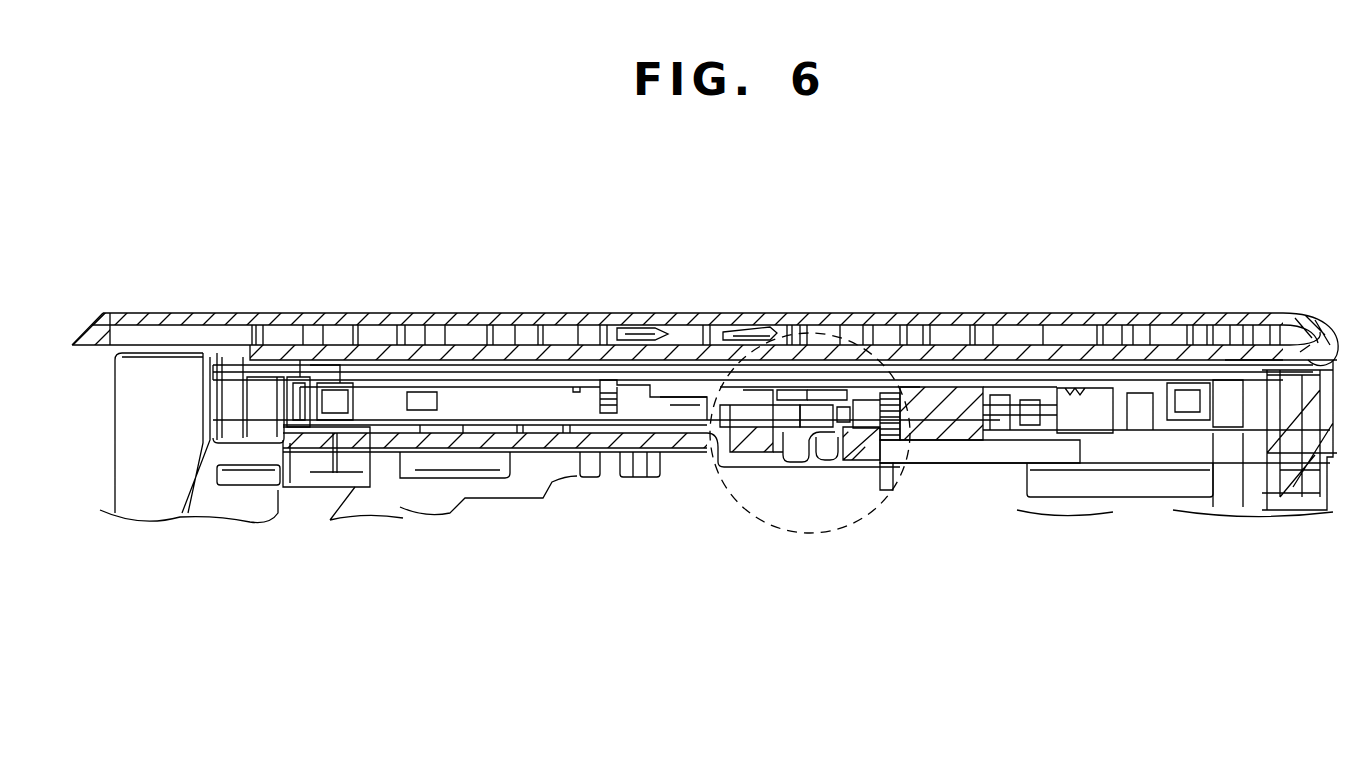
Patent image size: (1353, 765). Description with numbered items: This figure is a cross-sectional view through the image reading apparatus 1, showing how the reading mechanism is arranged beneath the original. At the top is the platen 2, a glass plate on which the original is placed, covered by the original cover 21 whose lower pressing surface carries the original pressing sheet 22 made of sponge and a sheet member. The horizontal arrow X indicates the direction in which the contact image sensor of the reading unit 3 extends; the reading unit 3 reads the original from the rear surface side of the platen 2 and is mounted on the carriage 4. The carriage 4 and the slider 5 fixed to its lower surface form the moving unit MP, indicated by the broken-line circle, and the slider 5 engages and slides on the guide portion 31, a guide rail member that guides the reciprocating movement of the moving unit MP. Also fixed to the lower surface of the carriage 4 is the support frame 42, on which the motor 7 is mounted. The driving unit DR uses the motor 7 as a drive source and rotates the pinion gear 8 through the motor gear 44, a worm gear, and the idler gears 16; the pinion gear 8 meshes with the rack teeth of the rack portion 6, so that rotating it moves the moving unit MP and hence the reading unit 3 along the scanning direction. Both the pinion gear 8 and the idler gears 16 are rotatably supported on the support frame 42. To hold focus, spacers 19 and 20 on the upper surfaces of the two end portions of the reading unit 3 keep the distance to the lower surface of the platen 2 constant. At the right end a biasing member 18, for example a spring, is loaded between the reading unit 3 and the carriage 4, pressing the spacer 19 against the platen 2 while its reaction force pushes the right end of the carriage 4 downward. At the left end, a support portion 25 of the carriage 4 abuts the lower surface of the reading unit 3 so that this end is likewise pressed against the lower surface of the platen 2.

The image reading apparatus 1 is at (156, 462).
The platen 2 is at (1108, 367).
The reading unit 3 is at (376, 397).
The carriage 4 is at (495, 397).
The slider 5 is at (848, 443).
The rack portion 6 is at (793, 447).
The motor 7 is at (947, 400).
The pinion gear 8 is at (735, 437).
The idler gears 16 is at (808, 413).
The biasing member 18 is at (1198, 425).
The spacer 19 is at (1245, 385).
The spacer 20 is at (314, 358).
The original cover 21 is at (749, 326).
The original pressing sheet 22 is at (612, 350).
The support portion 25 is at (293, 425).
The guide portion 31 is at (825, 447).
The support frame 42 is at (681, 405).
The motor gear 44 is at (860, 410).
The driving unit DR is at (947, 452).
The moving unit MP is at (876, 521).
The arrow X direction X is at (1085, 230).